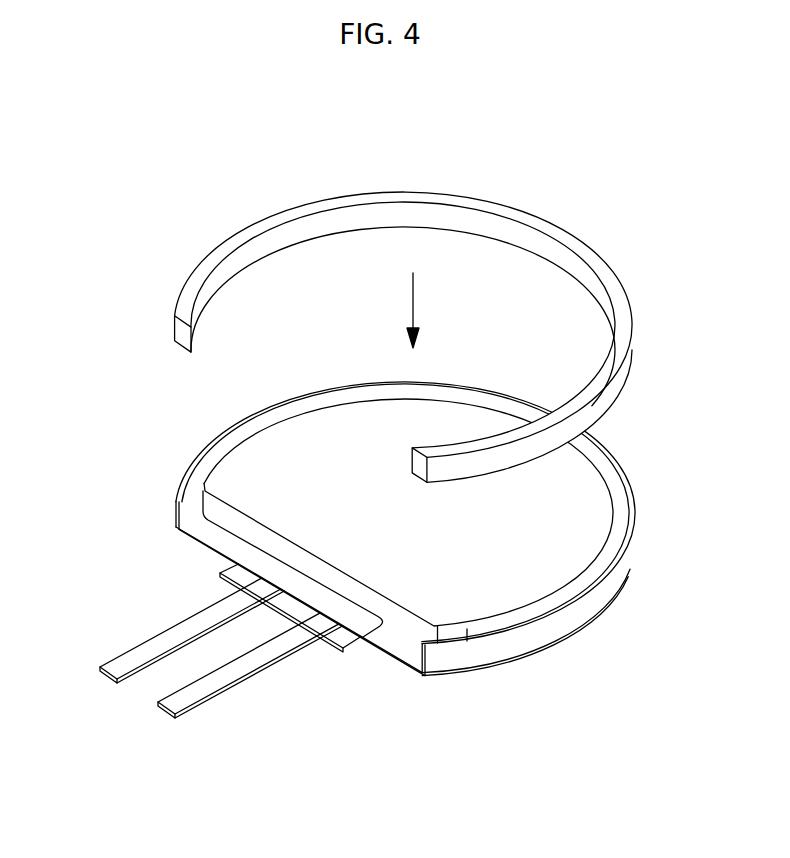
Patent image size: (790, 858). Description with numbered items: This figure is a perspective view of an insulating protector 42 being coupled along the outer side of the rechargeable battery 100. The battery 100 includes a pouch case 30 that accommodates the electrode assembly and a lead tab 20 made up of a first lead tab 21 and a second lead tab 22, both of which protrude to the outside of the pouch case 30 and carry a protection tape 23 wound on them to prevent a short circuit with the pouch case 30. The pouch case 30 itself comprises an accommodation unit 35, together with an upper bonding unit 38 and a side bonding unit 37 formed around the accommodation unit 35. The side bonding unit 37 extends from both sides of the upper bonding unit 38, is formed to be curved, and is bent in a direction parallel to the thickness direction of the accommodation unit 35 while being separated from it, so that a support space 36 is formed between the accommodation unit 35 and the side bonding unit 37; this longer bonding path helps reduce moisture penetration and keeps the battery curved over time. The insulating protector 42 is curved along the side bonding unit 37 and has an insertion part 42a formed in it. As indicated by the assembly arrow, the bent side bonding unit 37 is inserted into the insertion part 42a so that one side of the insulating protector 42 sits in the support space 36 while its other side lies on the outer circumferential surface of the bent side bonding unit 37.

The rechargeable battery 100 is at (420, 107).
The lead tab 20 is at (60, 712).
The first lead tab 21 is at (172, 710).
The second lead tab 22 is at (115, 674).
The protection tape 23 is at (288, 606).
The pouch case 30 is at (630, 450).
The accommodation unit 35 is at (584, 509).
The support space 36 is at (190, 499).
The side bonding unit 37 is at (197, 460).
The upper bonding unit 38 is at (210, 540).
The insulating protector 42 is at (586, 212).
The insertion part 42a is at (176, 346).